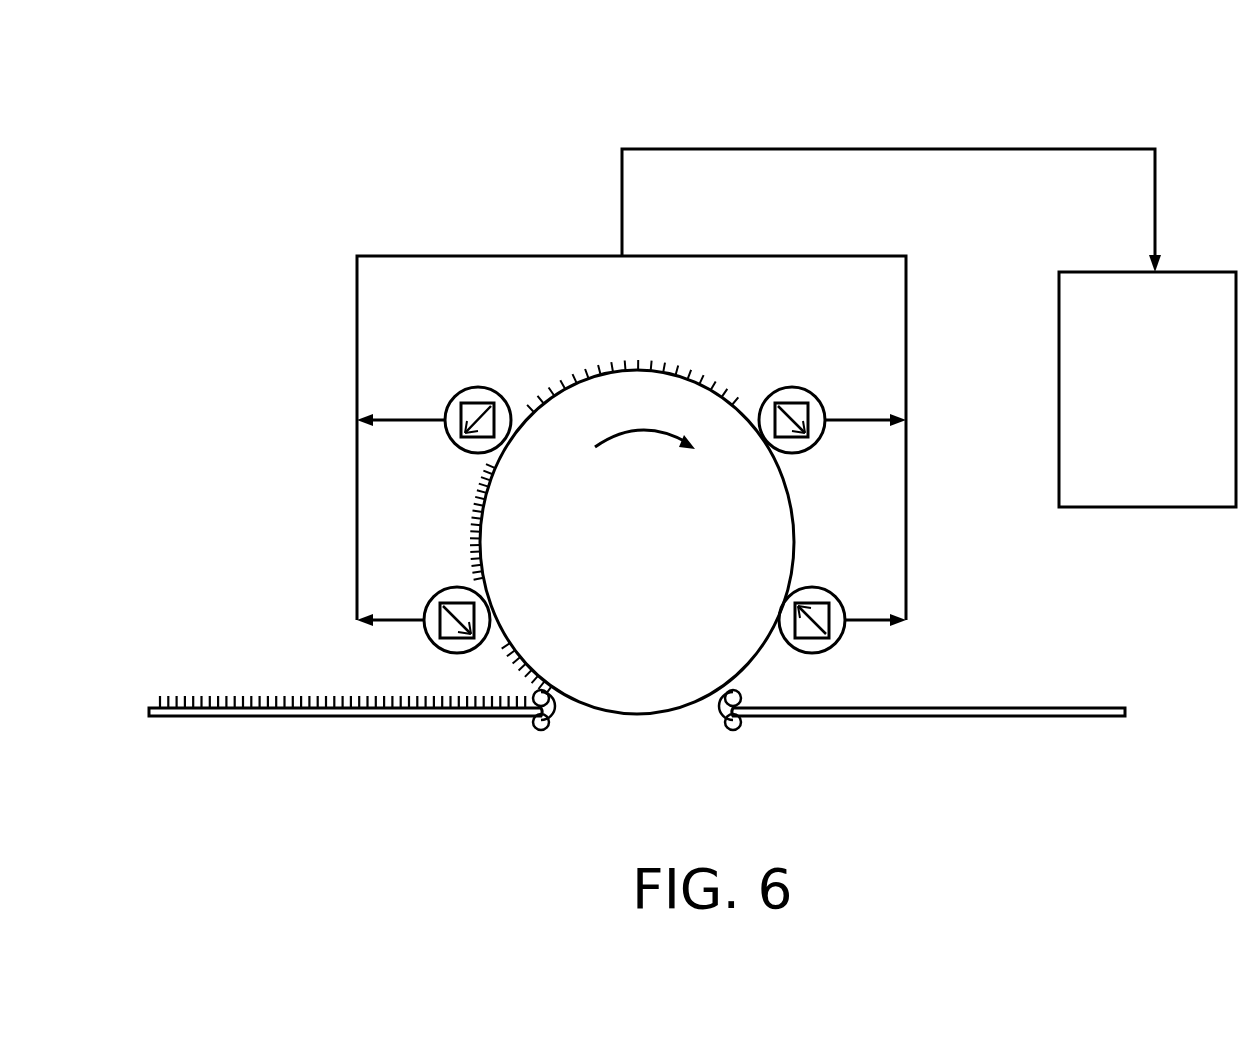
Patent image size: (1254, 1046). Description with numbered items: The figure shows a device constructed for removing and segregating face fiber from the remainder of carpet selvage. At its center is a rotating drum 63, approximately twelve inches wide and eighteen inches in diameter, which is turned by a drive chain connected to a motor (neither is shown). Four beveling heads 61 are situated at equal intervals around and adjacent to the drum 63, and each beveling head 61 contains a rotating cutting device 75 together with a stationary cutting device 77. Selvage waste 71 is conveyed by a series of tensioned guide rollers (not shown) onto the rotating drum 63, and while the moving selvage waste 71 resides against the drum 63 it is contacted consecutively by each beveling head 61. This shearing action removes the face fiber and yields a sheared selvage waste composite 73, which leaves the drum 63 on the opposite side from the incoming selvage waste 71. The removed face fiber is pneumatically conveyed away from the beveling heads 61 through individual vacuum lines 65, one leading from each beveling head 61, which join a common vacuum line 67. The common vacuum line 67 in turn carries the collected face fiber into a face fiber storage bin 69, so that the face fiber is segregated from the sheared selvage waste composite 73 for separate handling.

The beveling head 61 is at (508, 388).
The drum 63 is at (662, 562).
The individual vacuum line 65 is at (403, 406).
The common vacuum line 67 is at (906, 138).
The face fiber storage bin 69 is at (1177, 409).
The selvage waste 71 is at (380, 730).
The sheared selvage waste composite 73 is at (885, 730).
The rotating cutting device 75 is at (472, 438).
The stationary cutting device 77 is at (477, 406).